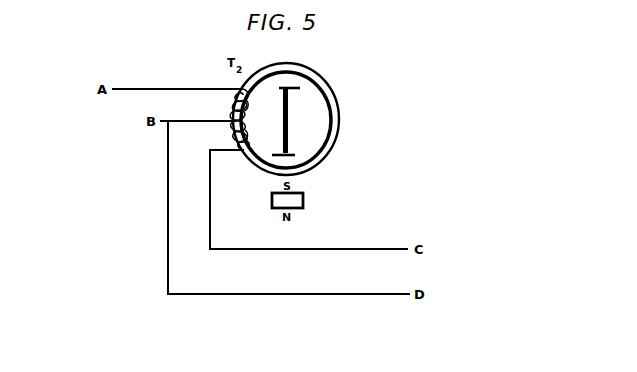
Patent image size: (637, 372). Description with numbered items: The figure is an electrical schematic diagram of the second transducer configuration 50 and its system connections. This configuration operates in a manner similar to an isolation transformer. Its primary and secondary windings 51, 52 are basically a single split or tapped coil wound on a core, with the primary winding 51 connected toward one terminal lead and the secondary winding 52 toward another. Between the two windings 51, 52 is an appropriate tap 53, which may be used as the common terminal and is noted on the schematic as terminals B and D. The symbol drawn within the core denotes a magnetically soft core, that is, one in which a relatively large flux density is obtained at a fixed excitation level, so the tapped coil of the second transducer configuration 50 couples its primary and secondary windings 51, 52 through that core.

The second transducer configuration 50 is at (340, 115).
The primary winding 51 is at (246, 104).
The secondary winding 52 is at (246, 135).
The tap 53 is at (210, 118).